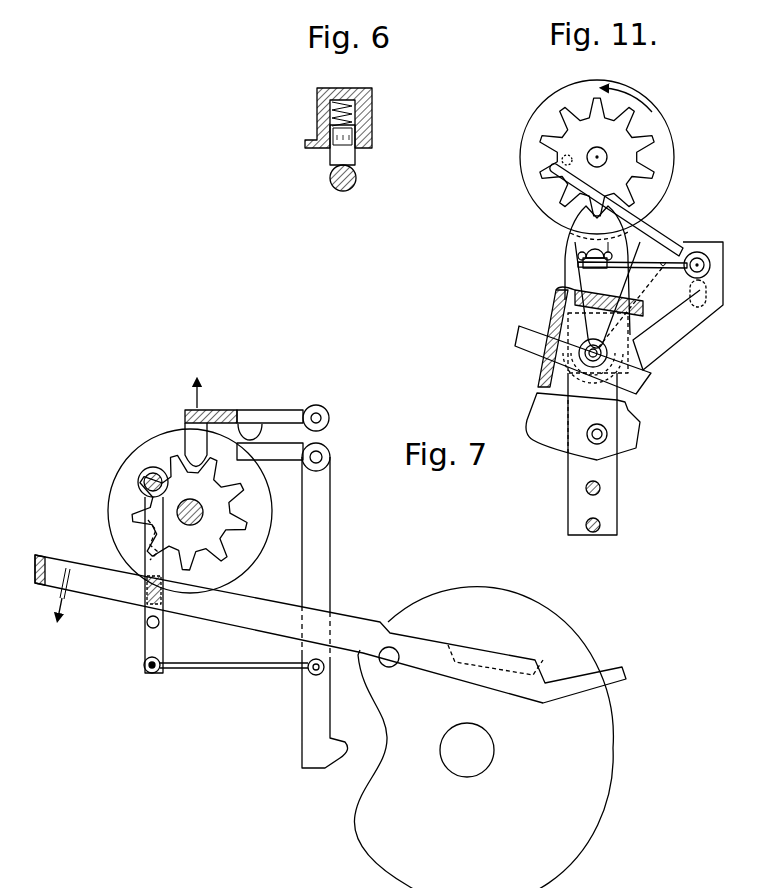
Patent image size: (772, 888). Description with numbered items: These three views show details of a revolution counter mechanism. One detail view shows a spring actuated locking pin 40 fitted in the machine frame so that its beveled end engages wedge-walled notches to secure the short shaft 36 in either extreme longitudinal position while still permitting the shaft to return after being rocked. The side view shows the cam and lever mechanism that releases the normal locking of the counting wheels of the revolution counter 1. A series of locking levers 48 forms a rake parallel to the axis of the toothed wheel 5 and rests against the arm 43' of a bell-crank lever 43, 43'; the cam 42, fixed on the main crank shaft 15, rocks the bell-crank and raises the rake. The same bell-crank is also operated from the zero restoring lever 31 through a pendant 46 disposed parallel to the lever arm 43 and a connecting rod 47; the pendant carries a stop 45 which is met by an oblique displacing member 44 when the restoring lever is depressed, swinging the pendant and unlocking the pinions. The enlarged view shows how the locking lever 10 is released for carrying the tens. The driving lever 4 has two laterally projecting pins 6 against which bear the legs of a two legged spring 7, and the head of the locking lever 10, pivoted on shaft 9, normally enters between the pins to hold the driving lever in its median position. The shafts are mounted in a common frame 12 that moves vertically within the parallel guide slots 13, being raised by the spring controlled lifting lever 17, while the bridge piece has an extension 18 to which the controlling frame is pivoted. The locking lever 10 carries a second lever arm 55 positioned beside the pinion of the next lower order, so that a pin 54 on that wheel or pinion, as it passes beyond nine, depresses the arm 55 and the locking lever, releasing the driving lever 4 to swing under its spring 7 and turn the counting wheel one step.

In FIG. 11, the revolution counter 1 is at (665, 128).
In FIG. 7, the revolution counter 1 is at (158, 455).
In FIG. 11, the driving lever 4 is at (565, 237).
In FIG. 7, the toothed wheel 5 is at (215, 548).
In FIG. 11, the laterally projecting pins 6 is at (588, 255).
In FIG. 11, the two legged spring 7 is at (578, 278).
In FIG. 11, the shaft 9 is at (701, 252).
In FIG. 11, the locking lever 10 is at (650, 262).
In FIG. 11, the frame 12 is at (643, 338).
In FIG. 11, the guide slots 13 is at (697, 308).
In FIG. 7, the shaft 15 is at (462, 765).
In FIG. 11, the lifting lever 17 is at (523, 340).
In FIG. 11, the extension 18 is at (545, 432).
In FIG. 7, the zero restoring lever 31 is at (130, 595).
In FIG. 6, the short shaft 36 is at (354, 186).
In FIG. 6, the locking pin 40 is at (350, 155).
In FIG. 7, the cam 42 is at (492, 633).
In FIG. 7, the bell-crank lever arm 43 is at (342, 612).
In FIG. 7, the bell-crank lever arm 43' is at (287, 417).
In FIG. 7, the oblique displacing member 44 is at (163, 596).
In FIG. 7, the stop 45 is at (148, 630).
In FIG. 7, the pendant 46 is at (148, 538).
In FIG. 7, the connecting rod 47 is at (267, 670).
In FIG. 7, the locking levers 48 is at (193, 430).
In FIG. 11, the pin 54 is at (524, 139).
In FIG. 11, the second lever arm 55 is at (655, 226).